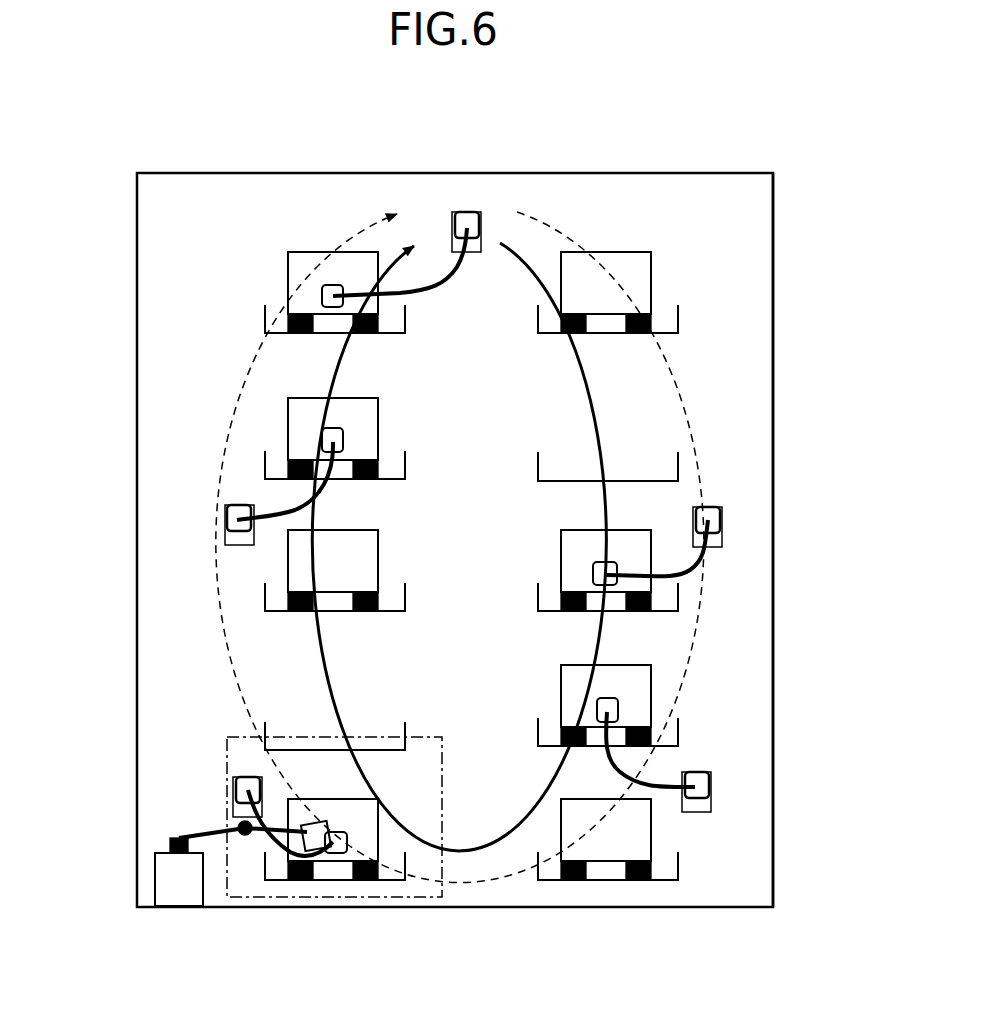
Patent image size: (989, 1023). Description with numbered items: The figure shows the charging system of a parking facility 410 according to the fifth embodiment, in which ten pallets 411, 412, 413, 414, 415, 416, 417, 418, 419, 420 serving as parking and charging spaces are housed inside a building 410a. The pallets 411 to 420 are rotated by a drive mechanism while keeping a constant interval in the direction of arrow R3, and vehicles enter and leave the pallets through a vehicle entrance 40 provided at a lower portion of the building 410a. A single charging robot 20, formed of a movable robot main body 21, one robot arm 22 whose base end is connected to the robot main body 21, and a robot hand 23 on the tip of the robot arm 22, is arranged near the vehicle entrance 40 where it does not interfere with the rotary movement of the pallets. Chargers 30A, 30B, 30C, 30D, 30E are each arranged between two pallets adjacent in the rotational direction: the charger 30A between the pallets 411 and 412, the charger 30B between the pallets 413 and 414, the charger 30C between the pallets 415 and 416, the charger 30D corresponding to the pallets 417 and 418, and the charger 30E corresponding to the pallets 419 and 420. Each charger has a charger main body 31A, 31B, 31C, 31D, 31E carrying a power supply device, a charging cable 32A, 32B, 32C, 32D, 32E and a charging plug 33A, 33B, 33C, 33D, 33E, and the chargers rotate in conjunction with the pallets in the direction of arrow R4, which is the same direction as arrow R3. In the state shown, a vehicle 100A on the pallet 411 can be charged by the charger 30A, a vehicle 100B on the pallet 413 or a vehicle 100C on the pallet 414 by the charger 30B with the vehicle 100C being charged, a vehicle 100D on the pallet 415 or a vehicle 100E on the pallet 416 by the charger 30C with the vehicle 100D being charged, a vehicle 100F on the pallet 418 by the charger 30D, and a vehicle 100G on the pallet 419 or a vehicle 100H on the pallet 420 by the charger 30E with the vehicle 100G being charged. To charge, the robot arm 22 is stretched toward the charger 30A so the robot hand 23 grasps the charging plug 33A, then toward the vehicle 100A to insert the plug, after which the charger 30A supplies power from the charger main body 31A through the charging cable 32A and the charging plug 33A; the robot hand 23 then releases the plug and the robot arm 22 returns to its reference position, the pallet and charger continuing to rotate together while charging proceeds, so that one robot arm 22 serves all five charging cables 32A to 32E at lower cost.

The parking facility 410 is at (138, 150).
The building 410a is at (774, 232).
The vehicle entrance 40 is at (422, 900).
The charging robot 20 is at (174, 880).
The robot main body 21 is at (155, 883).
The robot arm 22 is at (207, 828).
The robot hand 23 is at (300, 850).
The vehicle 100A is at (328, 798).
The vehicle 100B is at (378, 548).
The vehicle 100C is at (378, 422).
The vehicle 100D is at (318, 252).
The vehicle 100E is at (612, 252).
The vehicle 100F is at (628, 530).
The vehicle 100G is at (574, 665).
The vehicle 100H is at (580, 798).
The pallet 411 is at (265, 880).
The pallet 412 is at (406, 723).
The pallet 413 is at (407, 594).
The pallet 414 is at (405, 462).
The pallet 415 is at (405, 328).
The pallet 416 is at (678, 320).
The pallet 417 is at (678, 460).
The pallet 418 is at (538, 590).
The pallet 419 is at (538, 726).
The pallet 420 is at (605, 881).
The charger 30A is at (215, 755).
The charger 30B is at (206, 534).
The charger 30C is at (452, 181).
The charger 30D is at (764, 534).
The charger 30E is at (758, 814).
The charger main body 31A is at (238, 810).
The charger main body 31B is at (236, 543).
The charger main body 31C is at (452, 246).
The charger main body 31D is at (722, 540).
The charger main body 31E is at (694, 812).
The charging cable 32A is at (268, 845).
The charging cable 32B is at (277, 522).
The charging cable 32C is at (455, 272).
The charging cable 32D is at (697, 572).
The charging cable 32E is at (650, 783).
The charging plug 33A is at (336, 855).
The charging plug 33B is at (322, 441).
The charging plug 33C is at (322, 295).
The charging plug 33D is at (593, 573).
The charging plug 33E is at (607, 698).
The rotational direction of pallets R3 is at (333, 366).
The rotational direction of chargers R4 is at (248, 356).